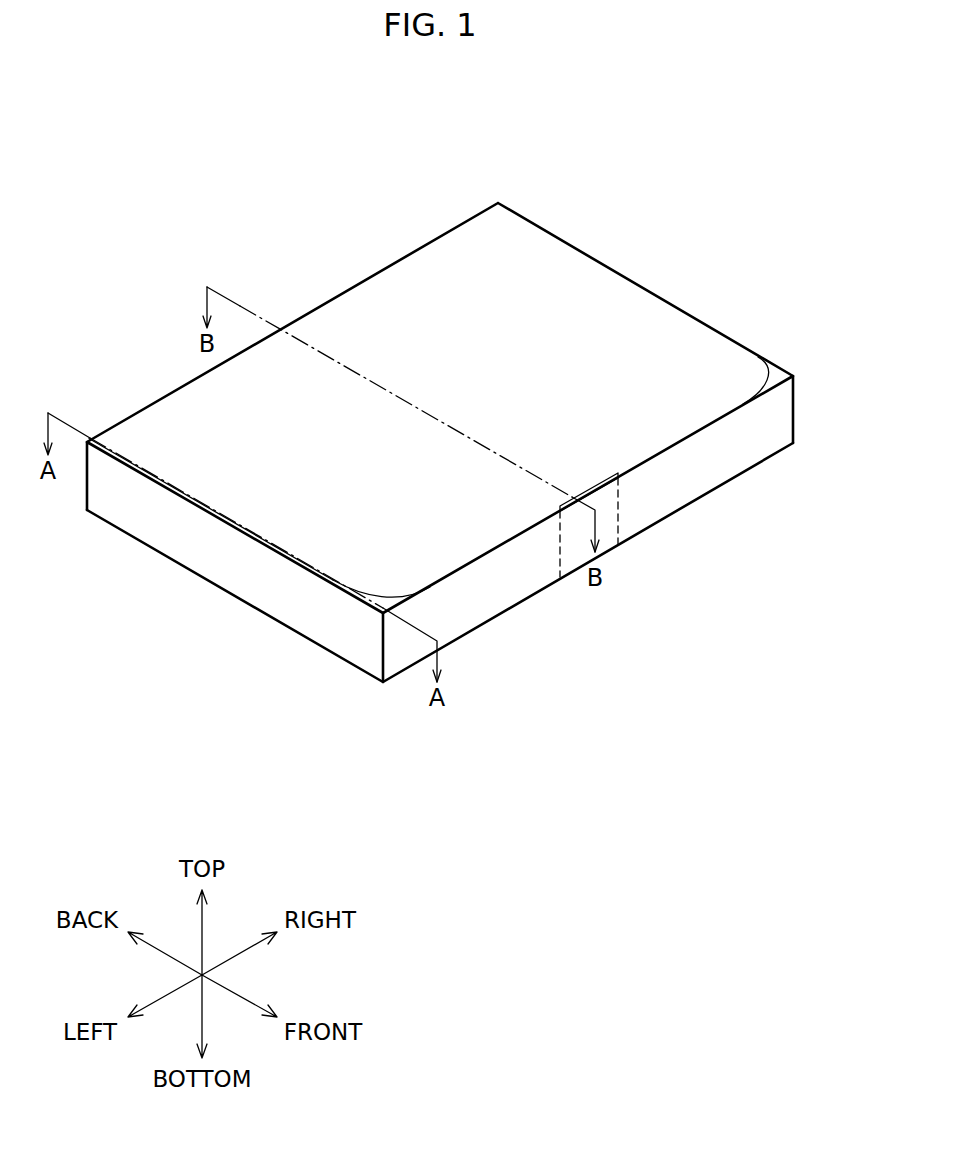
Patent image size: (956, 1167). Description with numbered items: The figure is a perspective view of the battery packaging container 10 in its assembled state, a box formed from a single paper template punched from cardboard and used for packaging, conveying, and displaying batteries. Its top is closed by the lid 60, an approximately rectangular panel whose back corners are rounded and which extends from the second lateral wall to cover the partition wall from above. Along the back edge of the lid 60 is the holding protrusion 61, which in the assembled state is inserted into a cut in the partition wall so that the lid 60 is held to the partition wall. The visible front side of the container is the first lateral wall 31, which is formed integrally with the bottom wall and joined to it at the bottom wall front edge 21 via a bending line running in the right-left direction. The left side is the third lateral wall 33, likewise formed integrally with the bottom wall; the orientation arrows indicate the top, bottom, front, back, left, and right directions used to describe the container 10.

The battery packaging container 10 is at (185, 170).
The bottom wall front edge 21 is at (503, 617).
The first lateral wall 31 is at (717, 458).
The third lateral wall 33 is at (252, 575).
The lid 60 is at (568, 315).
The holding protrusion 61 is at (601, 472).